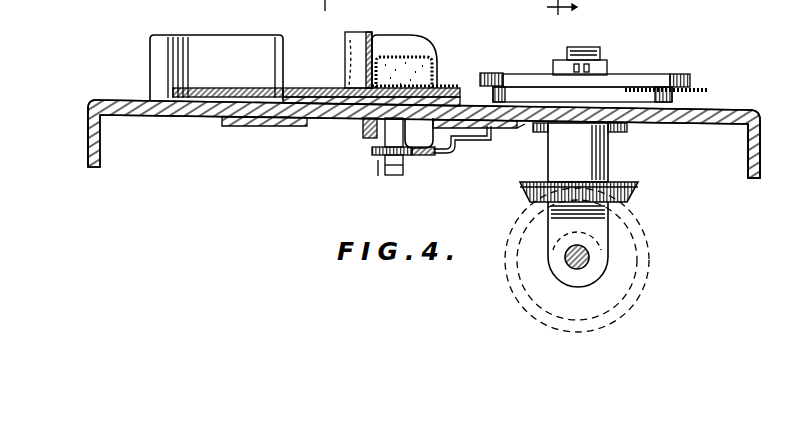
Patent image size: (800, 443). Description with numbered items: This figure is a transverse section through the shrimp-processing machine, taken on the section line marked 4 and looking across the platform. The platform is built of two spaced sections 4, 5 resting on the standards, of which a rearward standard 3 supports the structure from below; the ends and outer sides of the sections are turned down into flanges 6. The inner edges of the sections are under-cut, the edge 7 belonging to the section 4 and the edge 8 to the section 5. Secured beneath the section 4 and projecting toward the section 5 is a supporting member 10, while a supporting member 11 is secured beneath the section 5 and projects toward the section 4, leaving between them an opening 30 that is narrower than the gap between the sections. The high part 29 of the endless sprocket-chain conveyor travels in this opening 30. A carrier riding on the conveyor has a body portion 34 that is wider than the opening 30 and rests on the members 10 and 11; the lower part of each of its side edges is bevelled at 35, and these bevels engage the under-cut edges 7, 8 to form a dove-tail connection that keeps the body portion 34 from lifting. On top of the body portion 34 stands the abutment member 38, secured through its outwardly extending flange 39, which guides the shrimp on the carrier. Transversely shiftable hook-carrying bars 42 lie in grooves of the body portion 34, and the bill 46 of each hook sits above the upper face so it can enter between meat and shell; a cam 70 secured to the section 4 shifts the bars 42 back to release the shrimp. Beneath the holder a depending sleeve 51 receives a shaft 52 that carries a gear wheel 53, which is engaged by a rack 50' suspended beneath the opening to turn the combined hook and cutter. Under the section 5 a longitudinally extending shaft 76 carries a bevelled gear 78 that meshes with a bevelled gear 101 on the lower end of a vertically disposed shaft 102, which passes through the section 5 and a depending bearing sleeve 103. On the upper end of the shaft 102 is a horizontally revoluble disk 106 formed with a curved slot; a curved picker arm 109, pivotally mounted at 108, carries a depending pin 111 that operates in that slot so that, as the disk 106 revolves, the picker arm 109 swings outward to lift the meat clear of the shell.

The rearward standard 3 is at (321, 15).
The platform section 4 is at (562, 18).
The platform section 5 is at (735, 112).
The down-turned flange 6 is at (88, 124).
The under-cut inner side edge 7 is at (272, 100).
The under-cut inner side edge 8 is at (497, 97).
The supporting member 10 is at (250, 119).
The supporting member 11 is at (522, 124).
The high part of the conveyor 29 is at (378, 138).
The opening 30 is at (348, 119).
The body portion 34 is at (310, 103).
The bevel 35 is at (283, 120).
The abutment member 38 is at (370, 34).
The outwardly extending flange 39 is at (365, 84).
The hook-carrying bar 42 is at (210, 82).
The bill of the hook 46 is at (440, 87).
The rack 50' is at (448, 148).
The sleeve 51 is at (420, 156).
The shaft 52 is at (393, 176).
The gear wheel 53 is at (378, 160).
The cam 70 is at (160, 48).
The longitudinally extending shaft 76 is at (585, 253).
The bevelled gear 78 is at (650, 258).
The bevelled gear 101 is at (632, 190).
The vertically disposed shaft 102 is at (592, 47).
The bearing sleeve 103 is at (605, 150).
The horizontally revoluble disk 106 is at (628, 87).
The pivot 108 is at (688, 78).
The curved picker arm 109 is at (657, 78).
The depending pin 111 is at (637, 107).